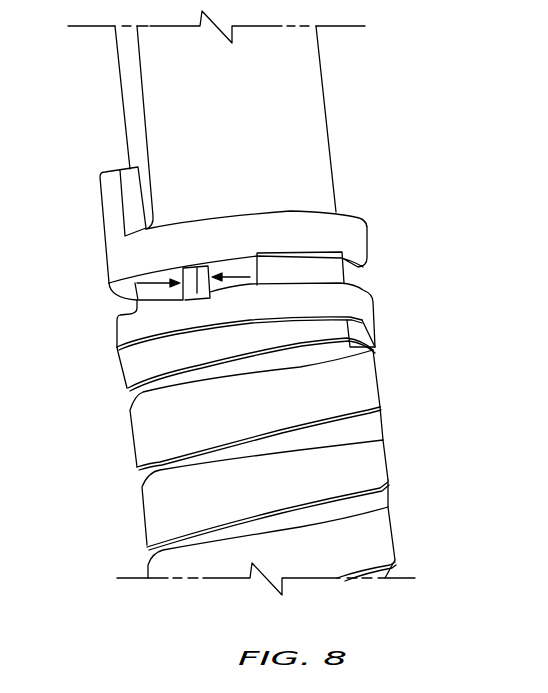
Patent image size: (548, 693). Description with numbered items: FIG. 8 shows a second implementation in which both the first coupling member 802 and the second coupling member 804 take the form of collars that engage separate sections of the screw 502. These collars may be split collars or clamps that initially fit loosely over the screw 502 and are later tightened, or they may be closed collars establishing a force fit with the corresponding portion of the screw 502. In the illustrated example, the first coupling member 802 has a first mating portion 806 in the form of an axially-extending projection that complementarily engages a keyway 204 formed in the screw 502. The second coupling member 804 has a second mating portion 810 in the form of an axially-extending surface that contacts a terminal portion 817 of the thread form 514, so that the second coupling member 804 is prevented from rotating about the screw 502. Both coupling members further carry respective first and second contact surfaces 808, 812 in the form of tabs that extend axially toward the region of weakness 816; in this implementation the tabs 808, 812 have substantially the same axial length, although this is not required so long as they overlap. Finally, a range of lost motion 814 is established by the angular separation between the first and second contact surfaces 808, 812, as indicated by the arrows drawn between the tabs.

The keyway 204 is at (122, 89).
The screw 502 is at (327, 130).
The thread form 514 is at (375, 497).
The first coupling member 802 is at (365, 239).
The second coupling member 804 is at (113, 333).
The first mating portion 806 is at (107, 197).
The first contact surface 808 is at (240, 267).
The second mating portion 810 is at (372, 333).
The second contact surface 812 is at (110, 284).
The range of lost motion 814 is at (154, 270).
The region of weakness 816 is at (378, 263).
The terminal portion 817 is at (328, 337).